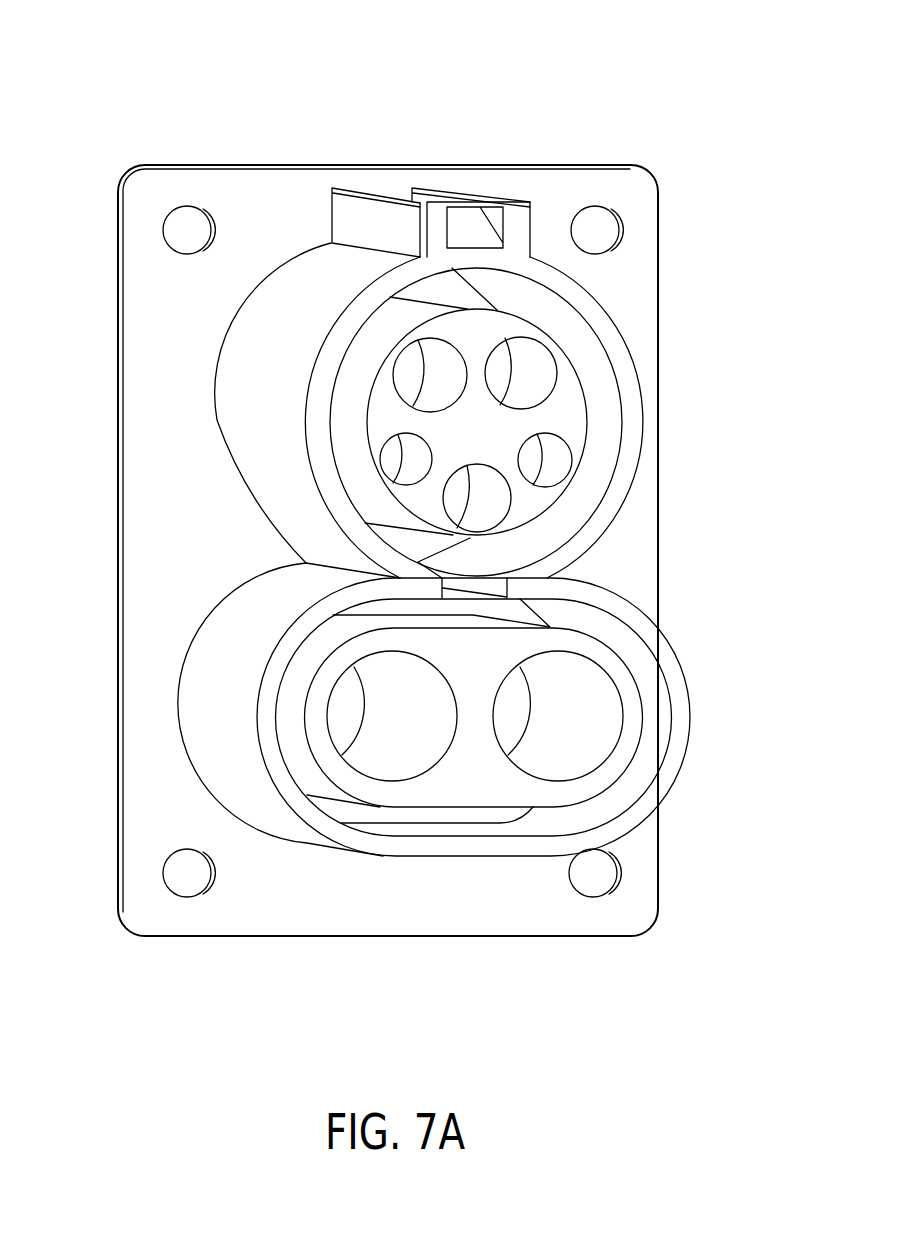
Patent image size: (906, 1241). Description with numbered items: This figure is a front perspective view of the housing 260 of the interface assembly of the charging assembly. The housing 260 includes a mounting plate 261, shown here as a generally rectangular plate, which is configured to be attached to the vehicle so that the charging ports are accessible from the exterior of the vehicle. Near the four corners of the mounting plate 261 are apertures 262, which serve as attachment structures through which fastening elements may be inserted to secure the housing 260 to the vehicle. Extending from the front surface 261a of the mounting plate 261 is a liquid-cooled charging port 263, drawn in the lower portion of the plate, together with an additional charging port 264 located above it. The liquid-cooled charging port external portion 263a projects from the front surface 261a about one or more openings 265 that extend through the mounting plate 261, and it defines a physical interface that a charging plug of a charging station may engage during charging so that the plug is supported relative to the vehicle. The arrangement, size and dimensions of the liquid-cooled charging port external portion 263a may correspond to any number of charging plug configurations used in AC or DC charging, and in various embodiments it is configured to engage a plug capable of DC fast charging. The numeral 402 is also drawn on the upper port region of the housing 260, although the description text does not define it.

The housing 260 is at (129, 46).
The mounting plate 261 is at (103, 197).
The front surface 261a is at (280, 186).
The apertures 262 is at (170, 232).
The additional charging ports 264 is at (681, 406).
The outer housing ring 402 is at (637, 543).
The liquid-cooled charging port 263 is at (718, 705).
The liquid-cooled charging port external portion 263a is at (668, 642).
The openings 265 is at (340, 722).